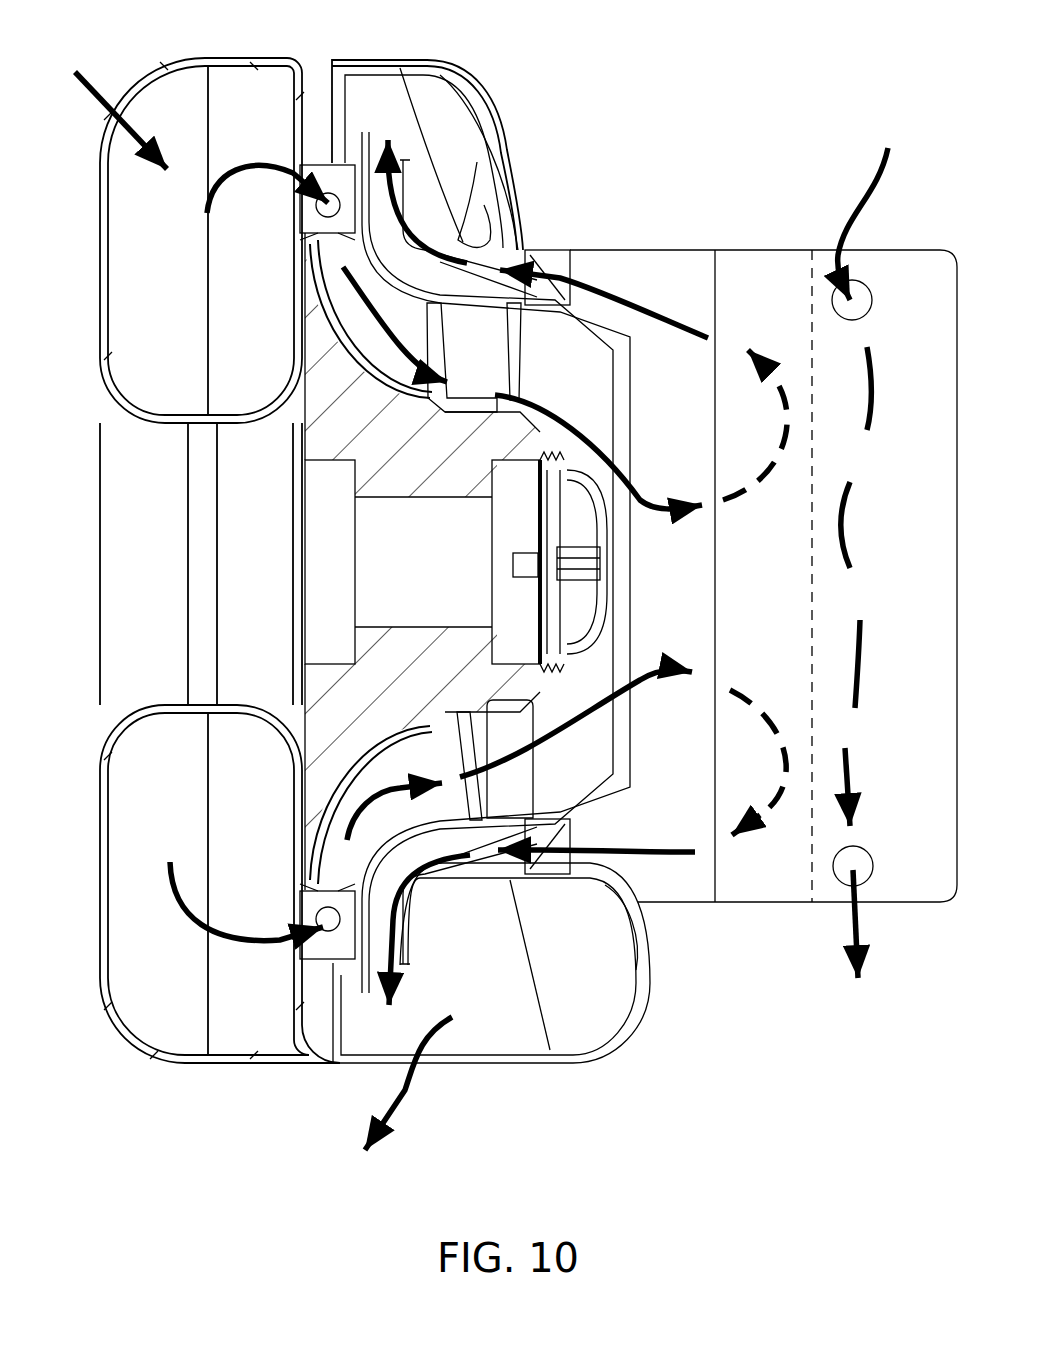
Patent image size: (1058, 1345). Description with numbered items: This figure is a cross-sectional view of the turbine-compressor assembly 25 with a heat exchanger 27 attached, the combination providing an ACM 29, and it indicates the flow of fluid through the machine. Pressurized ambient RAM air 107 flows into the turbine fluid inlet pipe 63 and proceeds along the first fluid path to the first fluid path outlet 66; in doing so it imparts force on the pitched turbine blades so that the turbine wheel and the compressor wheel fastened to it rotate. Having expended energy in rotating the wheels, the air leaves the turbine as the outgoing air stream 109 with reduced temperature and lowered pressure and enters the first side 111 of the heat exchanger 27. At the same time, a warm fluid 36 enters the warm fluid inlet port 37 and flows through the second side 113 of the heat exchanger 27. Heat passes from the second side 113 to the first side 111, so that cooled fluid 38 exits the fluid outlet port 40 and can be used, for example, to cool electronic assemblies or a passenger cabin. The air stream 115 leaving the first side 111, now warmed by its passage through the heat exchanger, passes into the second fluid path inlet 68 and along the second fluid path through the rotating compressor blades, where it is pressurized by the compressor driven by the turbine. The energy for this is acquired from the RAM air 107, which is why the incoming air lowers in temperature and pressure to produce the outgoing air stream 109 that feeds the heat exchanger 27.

The turbine-compressor assembly 25 is at (540, 150).
The heat exchanger 27 is at (898, 575).
The ACM 29 is at (718, 76).
The fluid 36 is at (868, 195).
The warm fluid inlet port 37 is at (873, 307).
The cooled fluid 38 is at (842, 920).
The fluid outlet port 40 is at (871, 860).
The turbine fluid inlet pipe 63 is at (102, 205).
The first fluid path outlet 66 is at (615, 662).
The second fluid path inlet 68 is at (573, 268).
The RAM air 107 is at (107, 96).
The outgoing air stream 109 is at (615, 475).
The first side 111 is at (748, 270).
The second side 113 is at (890, 262).
The air stream 115 is at (637, 307).